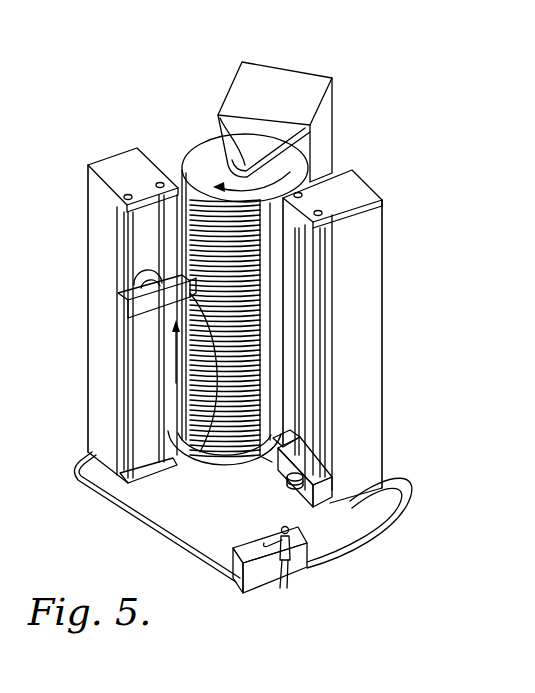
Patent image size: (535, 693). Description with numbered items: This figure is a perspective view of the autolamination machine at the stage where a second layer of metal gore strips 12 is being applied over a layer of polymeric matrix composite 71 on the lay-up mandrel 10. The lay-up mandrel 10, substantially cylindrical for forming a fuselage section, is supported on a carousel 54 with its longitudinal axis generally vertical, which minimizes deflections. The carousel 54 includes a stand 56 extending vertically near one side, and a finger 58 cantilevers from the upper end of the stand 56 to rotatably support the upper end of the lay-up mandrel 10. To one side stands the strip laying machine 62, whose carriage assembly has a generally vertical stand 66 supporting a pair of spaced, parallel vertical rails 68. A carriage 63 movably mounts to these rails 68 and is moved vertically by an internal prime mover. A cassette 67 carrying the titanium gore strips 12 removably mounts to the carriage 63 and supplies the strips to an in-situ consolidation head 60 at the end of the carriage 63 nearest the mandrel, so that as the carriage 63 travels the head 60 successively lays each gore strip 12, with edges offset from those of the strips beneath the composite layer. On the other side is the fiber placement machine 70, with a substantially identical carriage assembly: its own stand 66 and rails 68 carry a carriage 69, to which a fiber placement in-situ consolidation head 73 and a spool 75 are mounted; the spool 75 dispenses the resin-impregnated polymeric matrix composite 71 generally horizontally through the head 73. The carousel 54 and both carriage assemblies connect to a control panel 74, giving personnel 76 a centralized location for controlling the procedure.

The lay-up mandrel 10 is at (182, 152).
The gore strips 12 is at (268, 380).
The carousel 54 is at (265, 462).
The stand 56 is at (323, 130).
The finger 58 is at (215, 123).
The in-situ consolidation head 60 is at (215, 458).
The strip laying machine 62 is at (227, 281).
The carriage 63 is at (118, 308).
The stand 66 is at (88, 337).
The cassette 67 is at (137, 273).
The rails 68 is at (162, 230).
The carriage 69 is at (353, 498).
The fiber placement machine 70 is at (352, 382).
The polymeric matrix composite 71 is at (233, 449).
The fiber placement in-situ consolidation head 73 is at (297, 423).
The control panel 74 is at (298, 568).
The spool 75 is at (296, 492).
The personnel 76 is at (263, 577).